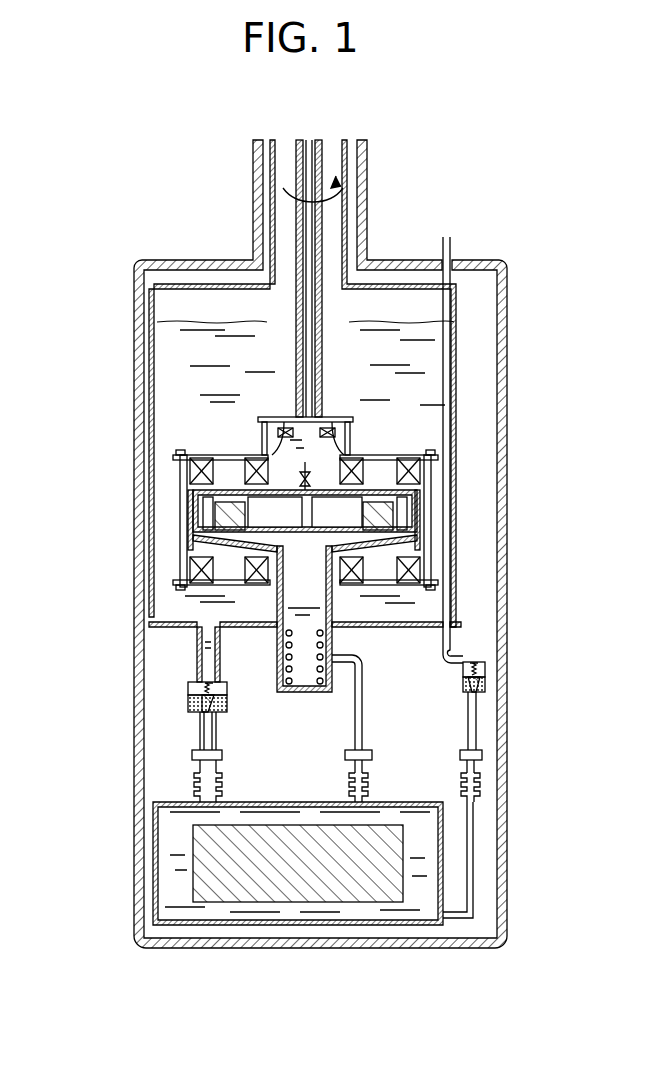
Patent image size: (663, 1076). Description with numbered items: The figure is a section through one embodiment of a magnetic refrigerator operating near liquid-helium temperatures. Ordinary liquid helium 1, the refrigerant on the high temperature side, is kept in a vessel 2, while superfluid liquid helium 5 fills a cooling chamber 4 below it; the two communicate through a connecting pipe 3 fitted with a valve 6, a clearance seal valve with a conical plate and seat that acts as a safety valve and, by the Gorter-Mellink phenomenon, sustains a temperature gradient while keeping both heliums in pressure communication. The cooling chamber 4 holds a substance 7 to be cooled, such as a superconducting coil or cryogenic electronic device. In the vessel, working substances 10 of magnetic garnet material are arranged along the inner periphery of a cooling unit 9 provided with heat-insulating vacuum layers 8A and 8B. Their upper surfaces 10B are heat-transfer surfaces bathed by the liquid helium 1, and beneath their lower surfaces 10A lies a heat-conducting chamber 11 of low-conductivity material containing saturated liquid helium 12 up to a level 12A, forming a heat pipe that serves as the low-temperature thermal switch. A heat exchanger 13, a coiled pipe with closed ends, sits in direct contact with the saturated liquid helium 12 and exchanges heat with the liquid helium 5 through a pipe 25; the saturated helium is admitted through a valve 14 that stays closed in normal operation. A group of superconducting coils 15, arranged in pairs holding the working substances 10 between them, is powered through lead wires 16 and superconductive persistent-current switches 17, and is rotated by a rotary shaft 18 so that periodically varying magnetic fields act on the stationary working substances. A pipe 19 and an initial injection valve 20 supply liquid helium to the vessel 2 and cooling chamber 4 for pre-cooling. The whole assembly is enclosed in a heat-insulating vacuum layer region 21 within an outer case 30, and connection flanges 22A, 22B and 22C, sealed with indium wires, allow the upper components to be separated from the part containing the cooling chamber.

The liquid helium 1 is at (163, 352).
The vessel 2 is at (151, 405).
The connecting pipe 3 is at (197, 648).
The cooling chamber 4 is at (153, 835).
The liquid helium 5 is at (168, 878).
The valve 6 is at (188, 697).
The substance to be cooled 7 is at (190, 905).
The heat-insulating vacuum layer 8A is at (198, 537).
The heat-insulating vacuum layer 8B is at (365, 488).
The cooling unit 9 is at (407, 520).
The working substances 10 is at (215, 505).
The lower surfaces 10A is at (190, 548).
The upper surfaces 10B is at (413, 493).
The heat-conducting chamber 11 is at (277, 648).
The saturated liquid helium 12 is at (314, 686).
The level of the saturated liquid helium 12A is at (303, 612).
The heat exchanger 13 is at (289, 685).
The valve 14 is at (303, 476).
The group of superconducting coils 15 is at (182, 470).
The lead wires 16 is at (300, 288).
The superconductive persistent-current switches 17 is at (345, 432).
The rotary shaft 18 is at (323, 243).
The pipe 19 is at (452, 258).
The initial injection valve 20 is at (486, 676).
The heat-insulating vacuum layer region 21 is at (488, 626).
The connection flange 22A is at (192, 757).
The connection flange 22B is at (372, 757).
The connection flange 22C is at (481, 758).
The pipe 25 is at (362, 712).
The outer case 30 is at (506, 593).